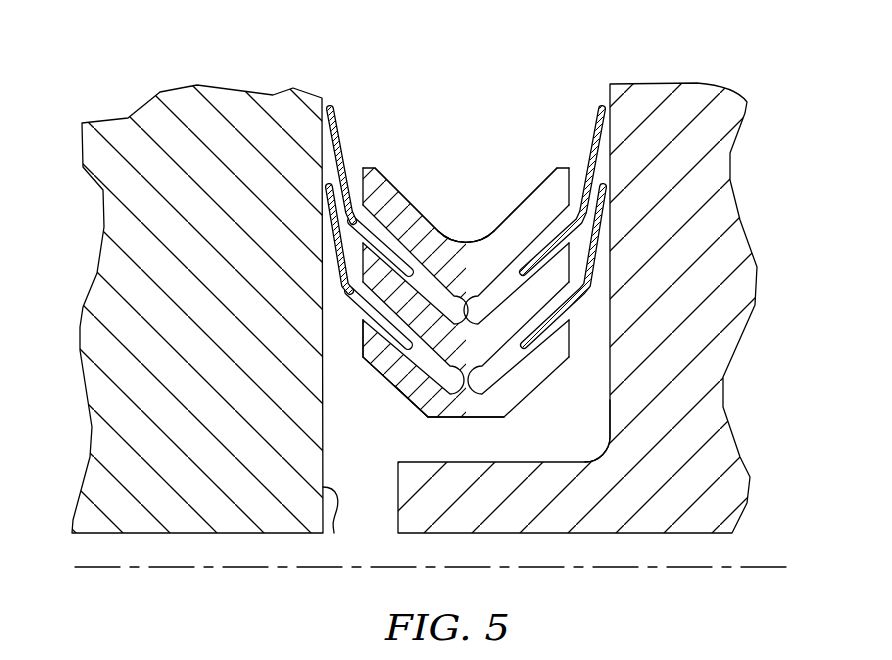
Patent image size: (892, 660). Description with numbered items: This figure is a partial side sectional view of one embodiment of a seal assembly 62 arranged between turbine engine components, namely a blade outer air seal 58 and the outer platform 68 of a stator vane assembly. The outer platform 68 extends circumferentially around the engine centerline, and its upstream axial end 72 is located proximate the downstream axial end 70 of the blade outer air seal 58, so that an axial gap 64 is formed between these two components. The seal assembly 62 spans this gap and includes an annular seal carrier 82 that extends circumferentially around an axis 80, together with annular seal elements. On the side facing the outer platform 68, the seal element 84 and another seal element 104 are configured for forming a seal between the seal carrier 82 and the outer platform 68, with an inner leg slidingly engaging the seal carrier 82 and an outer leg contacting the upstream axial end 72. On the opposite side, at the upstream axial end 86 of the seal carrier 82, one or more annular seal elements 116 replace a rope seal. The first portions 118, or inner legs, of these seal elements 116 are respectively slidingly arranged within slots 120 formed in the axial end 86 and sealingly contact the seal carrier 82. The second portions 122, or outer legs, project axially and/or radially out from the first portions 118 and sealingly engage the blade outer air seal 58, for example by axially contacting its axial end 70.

The blade outer air seal 58 is at (171, 450).
The seal assembly 62 is at (450, 126).
The axial gap 64 is at (464, 235).
The outer platform 68 is at (653, 471).
The downstream axial end 70 is at (329, 525).
The upstream axial end 72 is at (607, 410).
The axis 80 is at (757, 567).
The seal carrier 82 is at (413, 403).
The seal element 84 is at (598, 267).
The upstream axial end 86 is at (363, 340).
The seal element 104 is at (604, 153).
The seal elements 116 is at (343, 152).
The first portions 118 is at (378, 245).
The slots 120 is at (435, 287).
The second portions 122 is at (328, 160).